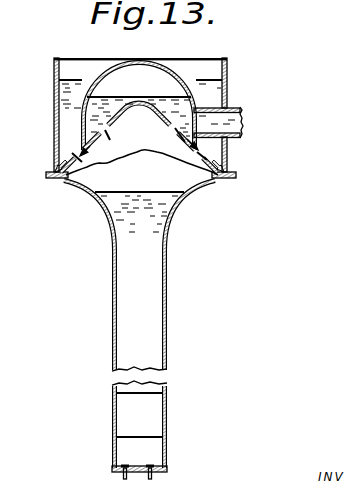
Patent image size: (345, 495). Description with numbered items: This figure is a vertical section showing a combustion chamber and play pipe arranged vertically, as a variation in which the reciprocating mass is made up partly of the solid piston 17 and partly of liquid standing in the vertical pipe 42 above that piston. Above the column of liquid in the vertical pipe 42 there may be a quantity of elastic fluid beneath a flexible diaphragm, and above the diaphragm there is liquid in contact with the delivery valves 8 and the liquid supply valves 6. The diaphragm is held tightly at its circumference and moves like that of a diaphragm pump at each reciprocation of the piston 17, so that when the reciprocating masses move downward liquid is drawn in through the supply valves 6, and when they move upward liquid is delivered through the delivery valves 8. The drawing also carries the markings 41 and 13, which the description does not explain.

The dome 41 is at (139, 106).
The delivery valves 8 is at (176, 134).
The liquid supply valves 6 is at (70, 155).
The liquid surface 13 is at (128, 158).
The vertical pipe 42 is at (139, 310).
The solid piston 17 is at (141, 408).